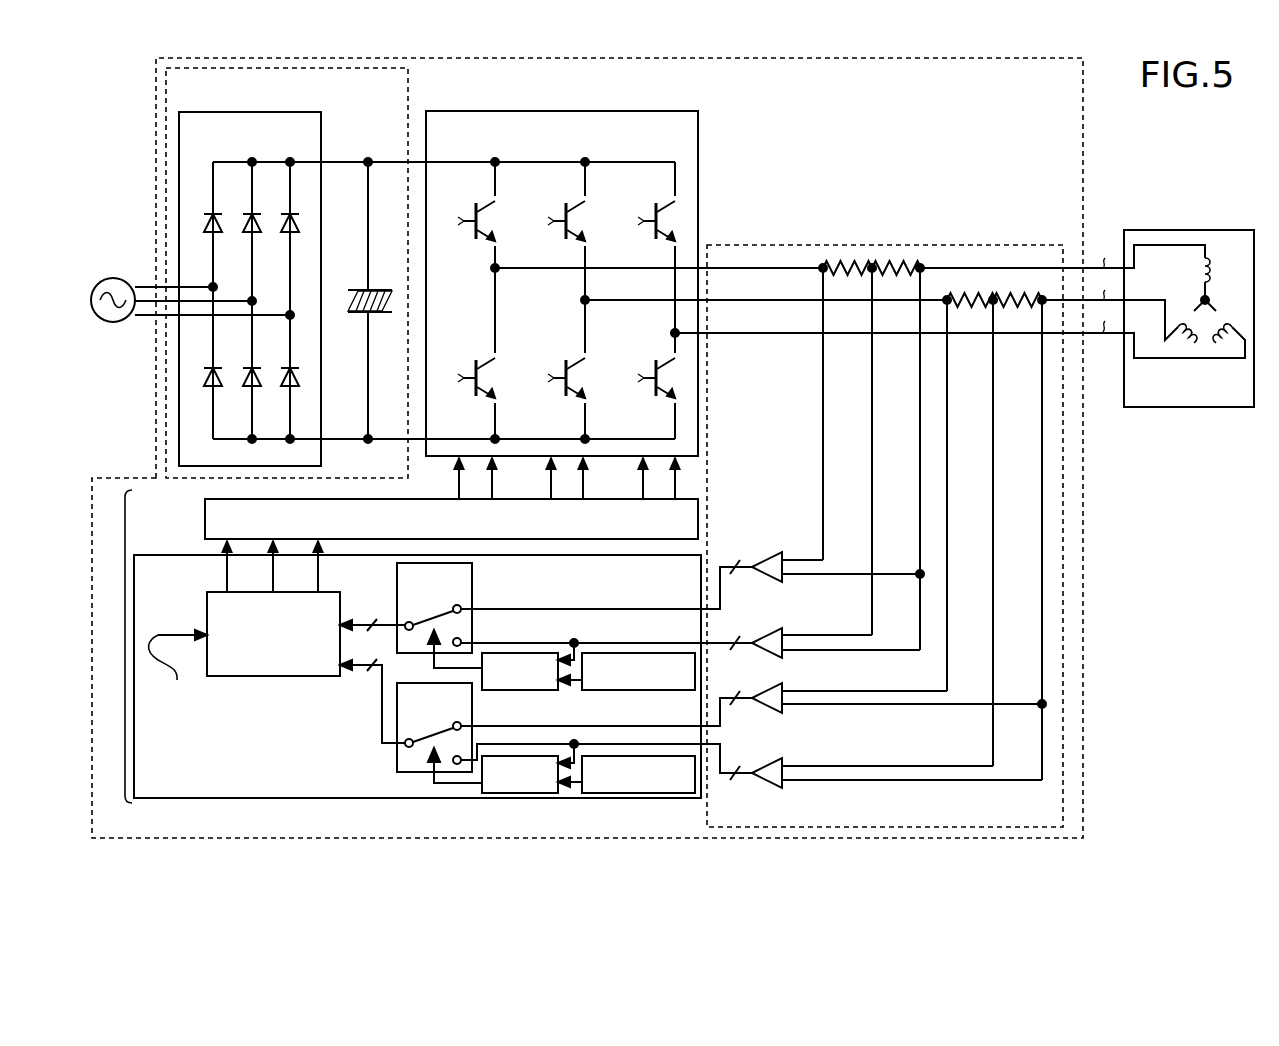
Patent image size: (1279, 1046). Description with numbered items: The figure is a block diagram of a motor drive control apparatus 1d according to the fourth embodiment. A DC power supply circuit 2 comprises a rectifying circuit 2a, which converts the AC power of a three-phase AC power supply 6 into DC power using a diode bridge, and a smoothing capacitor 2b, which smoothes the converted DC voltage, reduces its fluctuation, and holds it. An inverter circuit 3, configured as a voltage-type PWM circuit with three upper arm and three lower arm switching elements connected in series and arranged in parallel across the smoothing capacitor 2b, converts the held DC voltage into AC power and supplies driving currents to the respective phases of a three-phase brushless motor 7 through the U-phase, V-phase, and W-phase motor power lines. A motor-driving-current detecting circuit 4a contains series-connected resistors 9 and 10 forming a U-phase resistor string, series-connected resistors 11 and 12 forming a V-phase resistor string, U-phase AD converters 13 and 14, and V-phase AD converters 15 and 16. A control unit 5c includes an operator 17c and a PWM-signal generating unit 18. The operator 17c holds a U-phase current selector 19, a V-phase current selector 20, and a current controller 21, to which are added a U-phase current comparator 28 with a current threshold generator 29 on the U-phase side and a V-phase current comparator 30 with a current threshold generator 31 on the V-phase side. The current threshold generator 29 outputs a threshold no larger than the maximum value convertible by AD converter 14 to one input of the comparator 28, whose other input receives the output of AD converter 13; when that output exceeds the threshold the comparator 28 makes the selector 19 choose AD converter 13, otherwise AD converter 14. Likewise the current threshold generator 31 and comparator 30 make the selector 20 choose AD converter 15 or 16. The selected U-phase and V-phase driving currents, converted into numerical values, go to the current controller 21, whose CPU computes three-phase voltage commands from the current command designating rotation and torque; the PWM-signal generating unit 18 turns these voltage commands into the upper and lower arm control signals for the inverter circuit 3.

The motor drive control apparatus 1d is at (130, 477).
The DC power supply circuit 2 is at (408, 86).
The rectifying circuit 2a is at (323, 130).
The smoothing capacitor 2b is at (353, 283).
The inverter circuit 3 is at (698, 127).
The motor-driving-current detecting circuit 4a is at (706, 812).
The control unit 5c is at (125, 647).
The three-phase AC power supply 6 is at (113, 278).
The three-phase brushless motor 7 is at (1215, 230).
The resistor for U-phase current detection 9 is at (896, 260).
The resistor for U-phase current detection 10 is at (848, 260).
The resistor for V-phase current detection 11 is at (1019, 292).
The resistor for V-phase current detection 12 is at (971, 292).
The U-phase AD converter 13 is at (782, 630).
The U-phase AD converter 14 is at (758, 552).
The V-phase AD converter 15 is at (782, 760).
The V-phase AD converter 16 is at (782, 685).
The operator 17c is at (134, 555).
The PWM-signal generating unit 18 is at (205, 515).
The U-phase current selector 19 is at (472, 590).
The V-phase current selector 20 is at (397, 683).
The current controller 21 is at (287, 676).
The U-phase current comparator 28 is at (518, 690).
The current threshold generator 29 is at (616, 690).
The V-phase current comparator 30 is at (518, 793).
The current threshold generator 31 is at (616, 793).